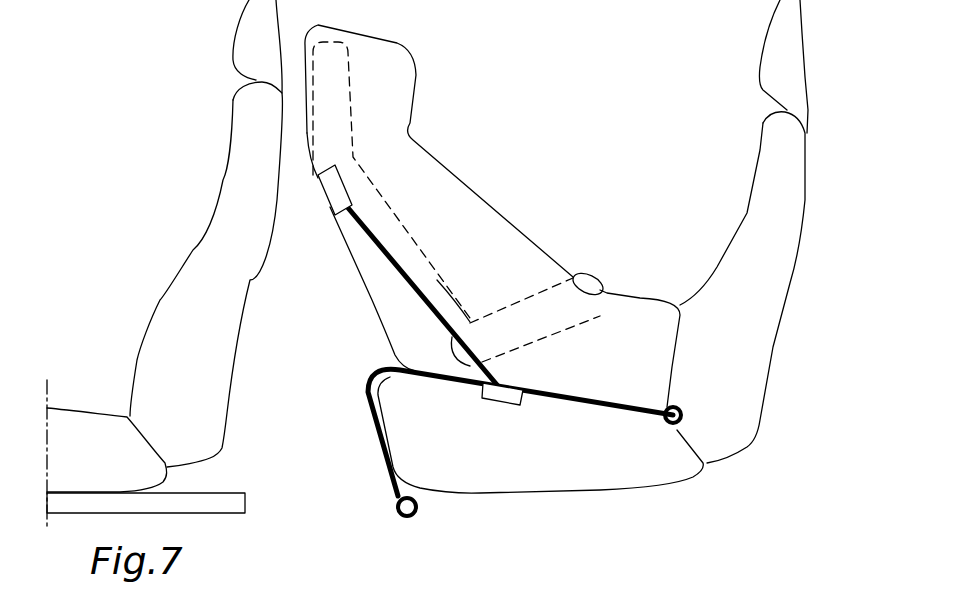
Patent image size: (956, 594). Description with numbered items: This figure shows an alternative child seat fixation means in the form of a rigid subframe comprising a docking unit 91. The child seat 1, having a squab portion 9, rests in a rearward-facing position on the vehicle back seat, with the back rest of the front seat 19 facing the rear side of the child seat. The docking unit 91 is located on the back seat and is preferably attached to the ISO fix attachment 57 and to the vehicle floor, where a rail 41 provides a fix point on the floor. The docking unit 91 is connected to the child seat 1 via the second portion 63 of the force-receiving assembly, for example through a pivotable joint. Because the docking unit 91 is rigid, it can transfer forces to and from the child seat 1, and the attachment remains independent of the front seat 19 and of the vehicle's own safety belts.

The child seat 1 is at (575, 63).
The squab portion 9 is at (605, 288).
The front seat 19 is at (222, 296).
The rail 41 is at (228, 504).
The ISO fix attachment 57 is at (672, 428).
The second portion of the force-receiving assembly 63 is at (318, 183).
The docking unit 91 is at (562, 407).